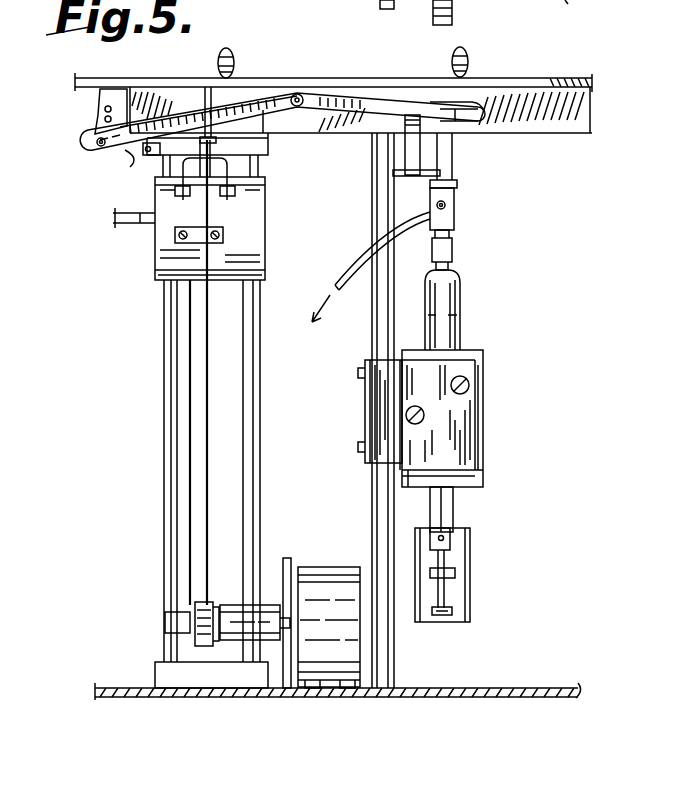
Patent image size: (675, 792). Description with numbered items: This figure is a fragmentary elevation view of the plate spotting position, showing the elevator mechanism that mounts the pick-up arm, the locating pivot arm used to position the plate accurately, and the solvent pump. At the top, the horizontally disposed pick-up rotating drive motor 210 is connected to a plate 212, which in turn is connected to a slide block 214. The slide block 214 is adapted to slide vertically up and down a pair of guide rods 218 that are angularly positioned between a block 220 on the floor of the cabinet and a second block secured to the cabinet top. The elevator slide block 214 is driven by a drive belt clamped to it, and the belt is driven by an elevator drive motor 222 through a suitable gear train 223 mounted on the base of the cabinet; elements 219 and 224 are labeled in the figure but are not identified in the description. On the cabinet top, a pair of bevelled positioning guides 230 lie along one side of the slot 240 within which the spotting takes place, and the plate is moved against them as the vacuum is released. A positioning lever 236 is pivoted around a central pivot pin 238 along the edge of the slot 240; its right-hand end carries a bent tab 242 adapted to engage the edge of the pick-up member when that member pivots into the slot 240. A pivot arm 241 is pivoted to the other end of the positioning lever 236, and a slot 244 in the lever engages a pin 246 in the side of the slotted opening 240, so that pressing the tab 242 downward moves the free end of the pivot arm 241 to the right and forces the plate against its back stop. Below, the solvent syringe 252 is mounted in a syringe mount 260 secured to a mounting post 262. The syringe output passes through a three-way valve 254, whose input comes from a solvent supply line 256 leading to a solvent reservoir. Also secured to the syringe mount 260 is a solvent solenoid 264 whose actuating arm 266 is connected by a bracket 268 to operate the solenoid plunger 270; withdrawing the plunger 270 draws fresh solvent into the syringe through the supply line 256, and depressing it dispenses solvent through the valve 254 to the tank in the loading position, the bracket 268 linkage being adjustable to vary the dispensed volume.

The pick-up rotating drive motor 210 is at (568, 4).
The plate 212 is at (128, 223).
The slide block 214 is at (490, 0).
The guide rods 218 is at (398, 1).
The piston rod 219 is at (455, 10).
The block 220 is at (225, 680).
The elevator drive motor 222 is at (330, 655).
The gear train 223 is at (245, 625).
The clamp yoke 224 is at (222, 228).
The bevelled positioning guides 230 is at (235, 55).
The positioning lever 236 is at (132, 160).
The central pivot pin 238 is at (297, 94).
The slot 240 is at (545, 81).
The pivot arm 241 is at (103, 97).
The bent tab 242 is at (472, 126).
The slot in the pivot lever 244 is at (98, 131).
The pin 246 is at (118, 97).
The solvent syringe 252 is at (450, 300).
The three-way valve 254 is at (455, 216).
The solvent supply line 256 is at (352, 260).
The syringe mount 260 is at (455, 420).
The mounting post 262 is at (378, 476).
The solvent solenoid 264 is at (460, 476).
The actuating arm 266 is at (445, 522).
The bracket 268 is at (455, 564).
The solenoid plunger 270 is at (445, 606).